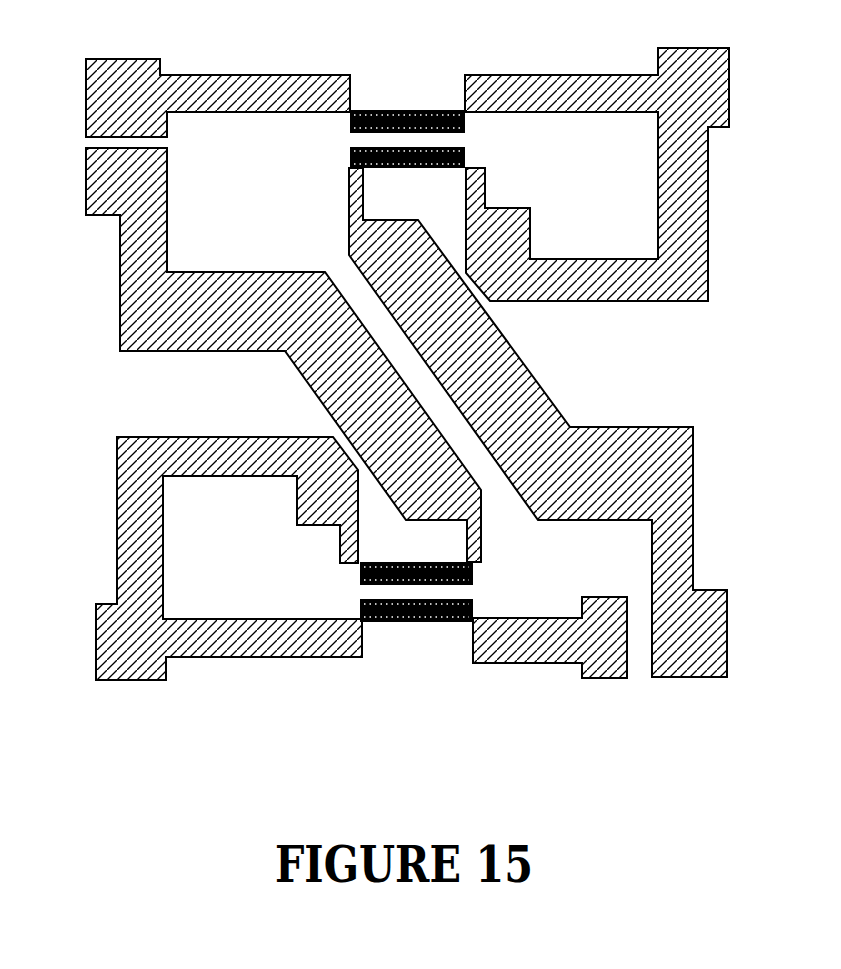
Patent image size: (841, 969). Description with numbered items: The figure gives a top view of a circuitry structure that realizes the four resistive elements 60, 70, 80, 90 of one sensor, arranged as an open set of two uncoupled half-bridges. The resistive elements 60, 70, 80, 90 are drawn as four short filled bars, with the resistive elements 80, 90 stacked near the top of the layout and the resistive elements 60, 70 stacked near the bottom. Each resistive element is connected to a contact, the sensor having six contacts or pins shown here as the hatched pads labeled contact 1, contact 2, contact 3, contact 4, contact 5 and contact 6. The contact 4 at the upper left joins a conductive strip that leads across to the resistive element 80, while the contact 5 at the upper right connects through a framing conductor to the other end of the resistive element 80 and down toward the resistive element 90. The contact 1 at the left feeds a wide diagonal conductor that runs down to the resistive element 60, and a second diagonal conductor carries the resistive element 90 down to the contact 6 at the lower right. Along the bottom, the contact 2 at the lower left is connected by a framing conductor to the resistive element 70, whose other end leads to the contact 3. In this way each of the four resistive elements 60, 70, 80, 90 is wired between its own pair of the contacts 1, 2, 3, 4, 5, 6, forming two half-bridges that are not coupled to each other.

The contact 1 is at (115, 190).
The contact 2 is at (105, 660).
The contact 3 is at (600, 662).
The contact 4 is at (147, 77).
The contact 5 is at (712, 77).
The contact 6 is at (715, 613).
The resistive element 60 is at (442, 562).
The resistive element 70 is at (397, 622).
The resistive element 80 is at (385, 110).
The resistive element 90 is at (465, 148).